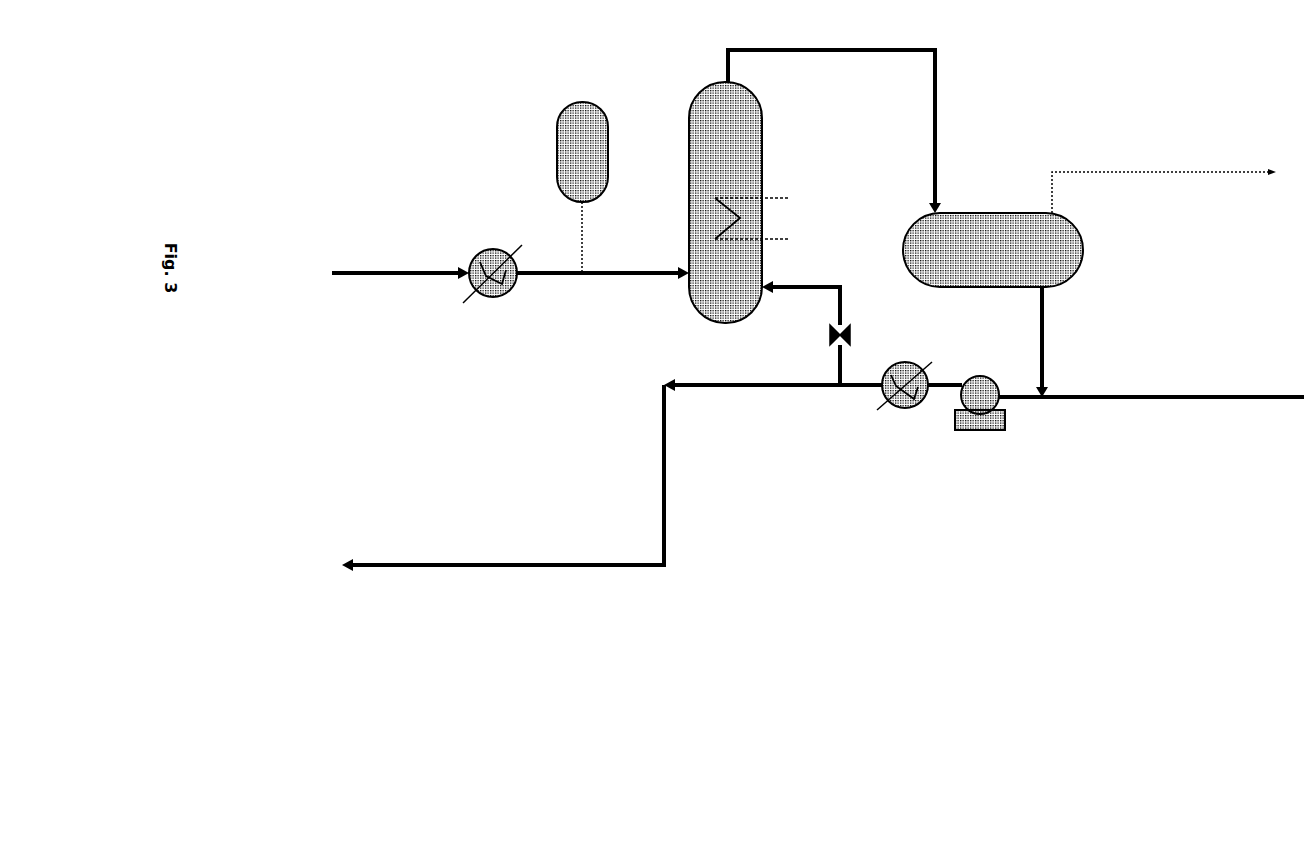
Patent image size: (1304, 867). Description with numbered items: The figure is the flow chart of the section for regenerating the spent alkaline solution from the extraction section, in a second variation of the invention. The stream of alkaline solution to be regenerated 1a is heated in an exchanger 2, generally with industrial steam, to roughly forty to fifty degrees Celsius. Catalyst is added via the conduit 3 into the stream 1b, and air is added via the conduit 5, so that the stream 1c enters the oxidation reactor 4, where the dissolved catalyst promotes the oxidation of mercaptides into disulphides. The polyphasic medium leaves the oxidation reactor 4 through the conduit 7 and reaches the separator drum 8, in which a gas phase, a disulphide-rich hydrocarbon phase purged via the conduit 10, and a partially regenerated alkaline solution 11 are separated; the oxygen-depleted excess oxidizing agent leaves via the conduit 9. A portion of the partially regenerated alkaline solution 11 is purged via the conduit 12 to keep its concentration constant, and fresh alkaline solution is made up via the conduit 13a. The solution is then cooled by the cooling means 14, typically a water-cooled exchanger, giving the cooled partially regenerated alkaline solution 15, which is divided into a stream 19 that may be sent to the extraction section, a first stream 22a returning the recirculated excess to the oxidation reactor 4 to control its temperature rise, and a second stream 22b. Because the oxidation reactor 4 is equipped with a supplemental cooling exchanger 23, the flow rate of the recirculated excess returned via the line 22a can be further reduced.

The stream of alkaline solution to be regenerated 1a is at (400, 288).
The stream 1b is at (558, 256).
The stream 1c is at (644, 258).
The exchanger 2 is at (492, 263).
The conduit for catalyst 3 is at (582, 187).
The oxidation reactor 4 is at (725, 202).
The conduit for air 5 is at (503, 333).
The conduit 7 is at (834, 131).
The separator drum 8 is at (993, 250).
The conduit 9 is at (1008, 213).
The conduit 10 is at (1164, 178).
The partially regenerated alkaline solution 11 is at (1055, 342).
The conduit 12 is at (1129, 402).
The conduit 13a is at (1030, 397).
The cooling means 14 is at (919, 371).
The cooled partially regenerated alkaline solution 15 is at (773, 376).
The stream 19 is at (503, 478).
The first stream 22a is at (801, 292).
The second stream 22b is at (818, 355).
The exchanger 23 is at (757, 218).